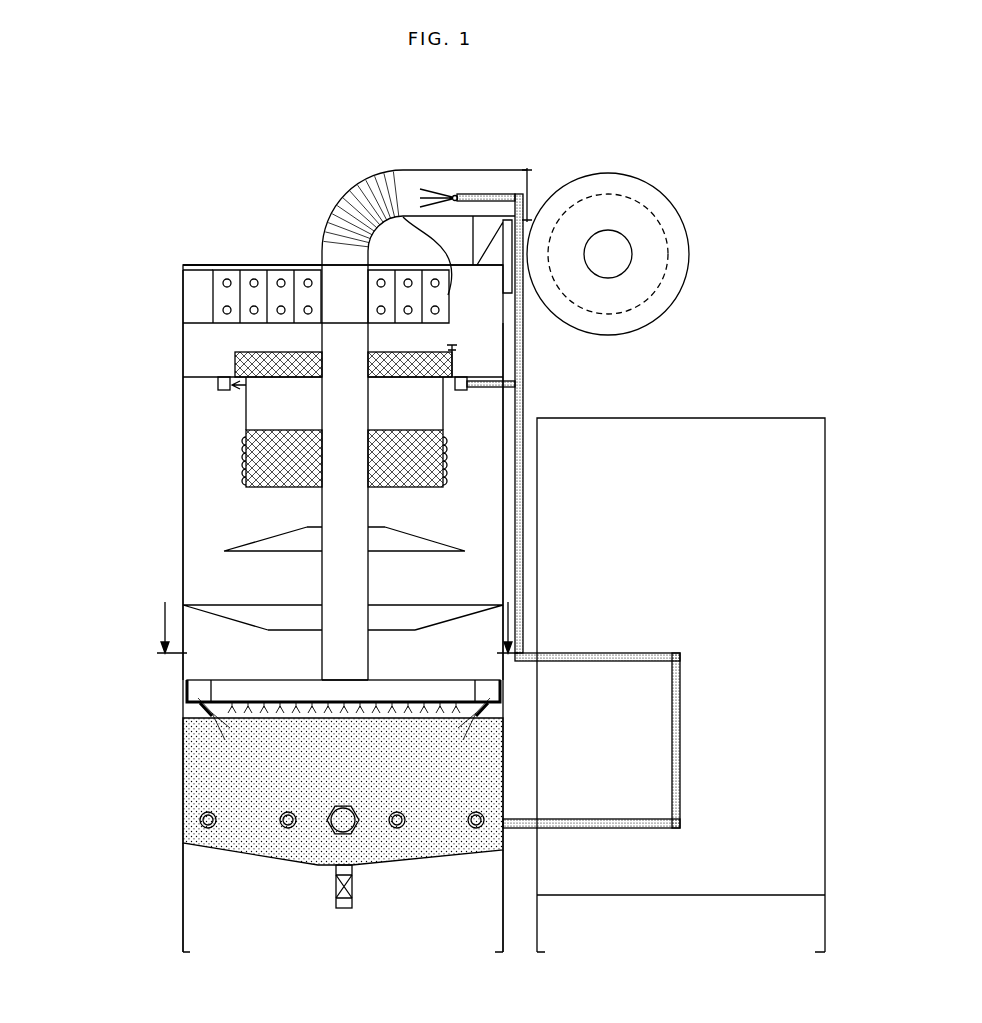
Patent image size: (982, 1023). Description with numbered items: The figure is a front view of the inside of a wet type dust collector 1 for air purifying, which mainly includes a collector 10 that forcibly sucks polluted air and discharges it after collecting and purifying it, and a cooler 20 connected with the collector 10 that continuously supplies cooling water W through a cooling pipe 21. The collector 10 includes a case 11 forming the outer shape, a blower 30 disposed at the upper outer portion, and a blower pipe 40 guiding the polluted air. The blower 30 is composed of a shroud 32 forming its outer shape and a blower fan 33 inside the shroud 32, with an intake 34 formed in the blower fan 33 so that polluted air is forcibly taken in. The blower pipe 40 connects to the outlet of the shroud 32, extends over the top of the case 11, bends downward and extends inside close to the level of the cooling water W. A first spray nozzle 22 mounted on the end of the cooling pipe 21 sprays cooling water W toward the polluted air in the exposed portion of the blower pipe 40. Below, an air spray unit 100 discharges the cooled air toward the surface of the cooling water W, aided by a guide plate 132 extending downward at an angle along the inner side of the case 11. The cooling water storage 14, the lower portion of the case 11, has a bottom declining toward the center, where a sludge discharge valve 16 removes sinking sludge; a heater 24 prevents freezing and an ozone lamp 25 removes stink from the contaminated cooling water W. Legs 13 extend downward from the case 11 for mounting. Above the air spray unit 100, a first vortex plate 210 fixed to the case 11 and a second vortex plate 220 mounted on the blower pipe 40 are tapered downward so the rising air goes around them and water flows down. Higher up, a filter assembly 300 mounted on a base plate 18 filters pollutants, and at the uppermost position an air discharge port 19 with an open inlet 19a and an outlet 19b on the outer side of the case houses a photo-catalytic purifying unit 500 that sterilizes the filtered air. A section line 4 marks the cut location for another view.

The wet type dust collector 1 is at (155, 117).
The collector 10 is at (212, 264).
The photo-catalytic purifying unit 500 is at (250, 265).
The blower pipe 40 is at (323, 262).
The inlet 19a is at (400, 213).
The first spray nozzle 22 is at (455, 192).
The blower 30 is at (600, 168).
The shroud 32 is at (645, 178).
The blower fan 33 is at (642, 225).
The intake 34 is at (620, 255).
The air discharge port 19 is at (190, 282).
The outlet 19b is at (183, 297).
The filter assembly 300 is at (235, 352).
The base plate 18 is at (183, 377).
The cooling pipe 21 is at (523, 395).
The cooler 20 is at (784, 411).
The case 11 is at (183, 480).
The second vortex plate 220 is at (265, 540).
The first vortex plate 210 is at (225, 605).
The section line 4-4' 4 is at (337, 615).
The air spray unit 100 is at (223, 677).
The guide plate 132 is at (190, 712).
The cooling water storage 14 is at (175, 723).
The cooling water W is at (238, 845).
The ozone lamp 25 is at (288, 828).
The heater 24 is at (343, 828).
The sludge discharge valve 16 is at (357, 895).
The legs 13 is at (183, 927).